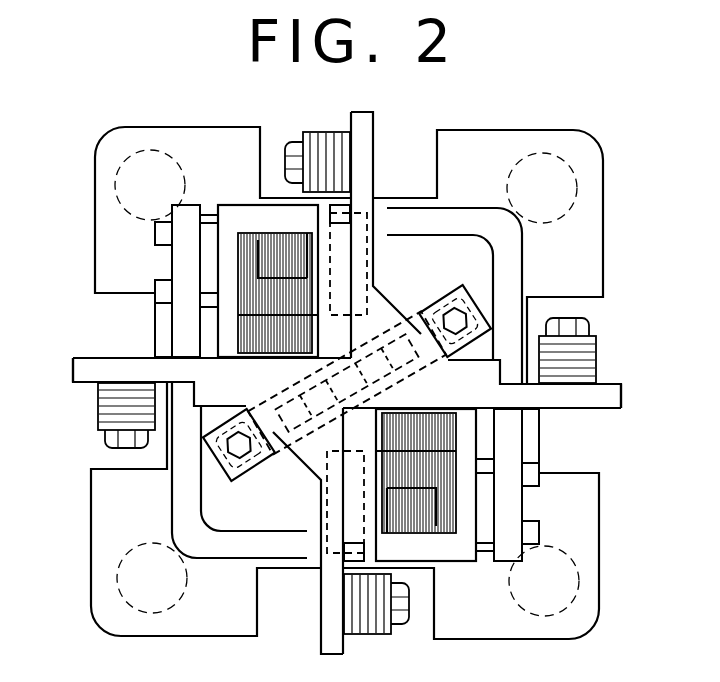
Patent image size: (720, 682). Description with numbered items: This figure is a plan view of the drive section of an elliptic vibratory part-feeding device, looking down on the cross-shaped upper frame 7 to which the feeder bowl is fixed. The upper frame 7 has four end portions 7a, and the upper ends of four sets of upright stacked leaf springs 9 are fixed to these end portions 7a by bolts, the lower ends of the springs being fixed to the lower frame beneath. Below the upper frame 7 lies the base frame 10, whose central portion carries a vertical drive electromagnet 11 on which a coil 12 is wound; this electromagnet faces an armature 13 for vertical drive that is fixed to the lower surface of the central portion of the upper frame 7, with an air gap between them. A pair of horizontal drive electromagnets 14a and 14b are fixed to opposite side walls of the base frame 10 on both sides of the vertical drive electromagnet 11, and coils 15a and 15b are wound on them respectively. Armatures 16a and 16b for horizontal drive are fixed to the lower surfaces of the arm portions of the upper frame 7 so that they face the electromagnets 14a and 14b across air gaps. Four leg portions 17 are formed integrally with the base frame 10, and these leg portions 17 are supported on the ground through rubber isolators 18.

The cross-shaped upper frame 7 is at (473, 386).
The end portions of the upper frame 7a is at (372, 124).
The upright stacked leaf springs 9 is at (327, 160).
The base frame 10 is at (508, 520).
The vertical drive electromagnet 11 is at (478, 310).
The coil 12 is at (284, 467).
The armature for vertical drive 13 is at (408, 302).
The horizontal drive electromagnet 14a is at (447, 548).
The horizontal drive electromagnet 14b is at (247, 218).
The coil 15a is at (443, 467).
The coil 15b is at (252, 337).
The armature for horizontal drive 16a is at (312, 570).
The armature for horizontal drive 16b is at (366, 240).
The leg portions 17 is at (103, 186).
The rubber isolators 18 is at (135, 160).